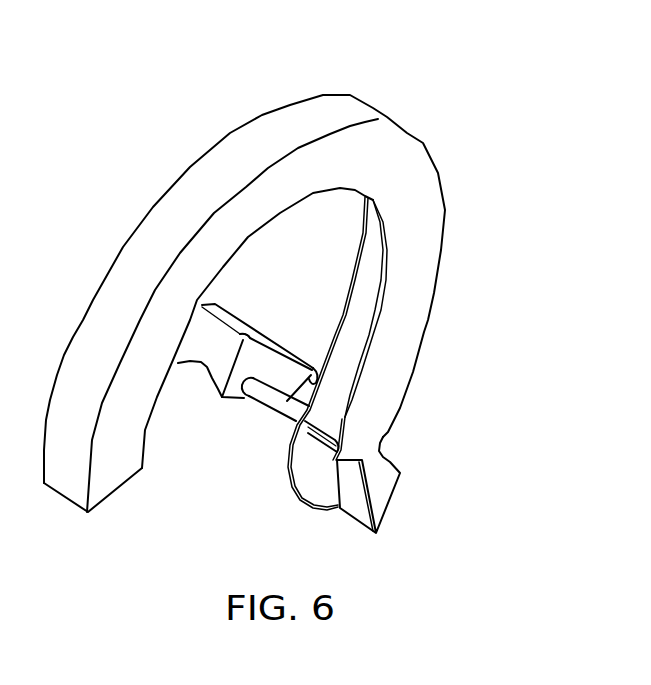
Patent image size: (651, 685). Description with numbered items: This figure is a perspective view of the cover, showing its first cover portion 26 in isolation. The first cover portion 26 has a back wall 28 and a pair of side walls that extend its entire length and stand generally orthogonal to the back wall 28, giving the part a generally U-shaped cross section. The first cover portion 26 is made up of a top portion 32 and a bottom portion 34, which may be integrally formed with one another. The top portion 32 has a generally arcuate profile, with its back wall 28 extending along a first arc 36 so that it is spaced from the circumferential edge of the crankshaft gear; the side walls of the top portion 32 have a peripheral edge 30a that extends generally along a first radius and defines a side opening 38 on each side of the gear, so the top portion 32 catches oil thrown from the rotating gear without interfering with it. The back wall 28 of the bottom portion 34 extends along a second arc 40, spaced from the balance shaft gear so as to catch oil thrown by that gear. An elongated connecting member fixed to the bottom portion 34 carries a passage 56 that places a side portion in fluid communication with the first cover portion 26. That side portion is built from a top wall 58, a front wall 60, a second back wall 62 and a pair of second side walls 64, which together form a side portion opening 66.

The first cover portion 26 is at (467, 94).
The back wall 28 is at (318, 98).
The peripheral edge 30a is at (297, 196).
The top portion 32 is at (216, 123).
The bottom portion 34 is at (314, 526).
The first arc 36 is at (380, 118).
The side opening 38 is at (186, 443).
The second arc 40 is at (383, 449).
The passage 56 is at (339, 424).
The top wall 58 is at (241, 313).
The front wall 60 is at (205, 365).
The second back wall 62 is at (315, 380).
The second side walls 64 is at (268, 354).
The side portion opening 66 is at (210, 392).